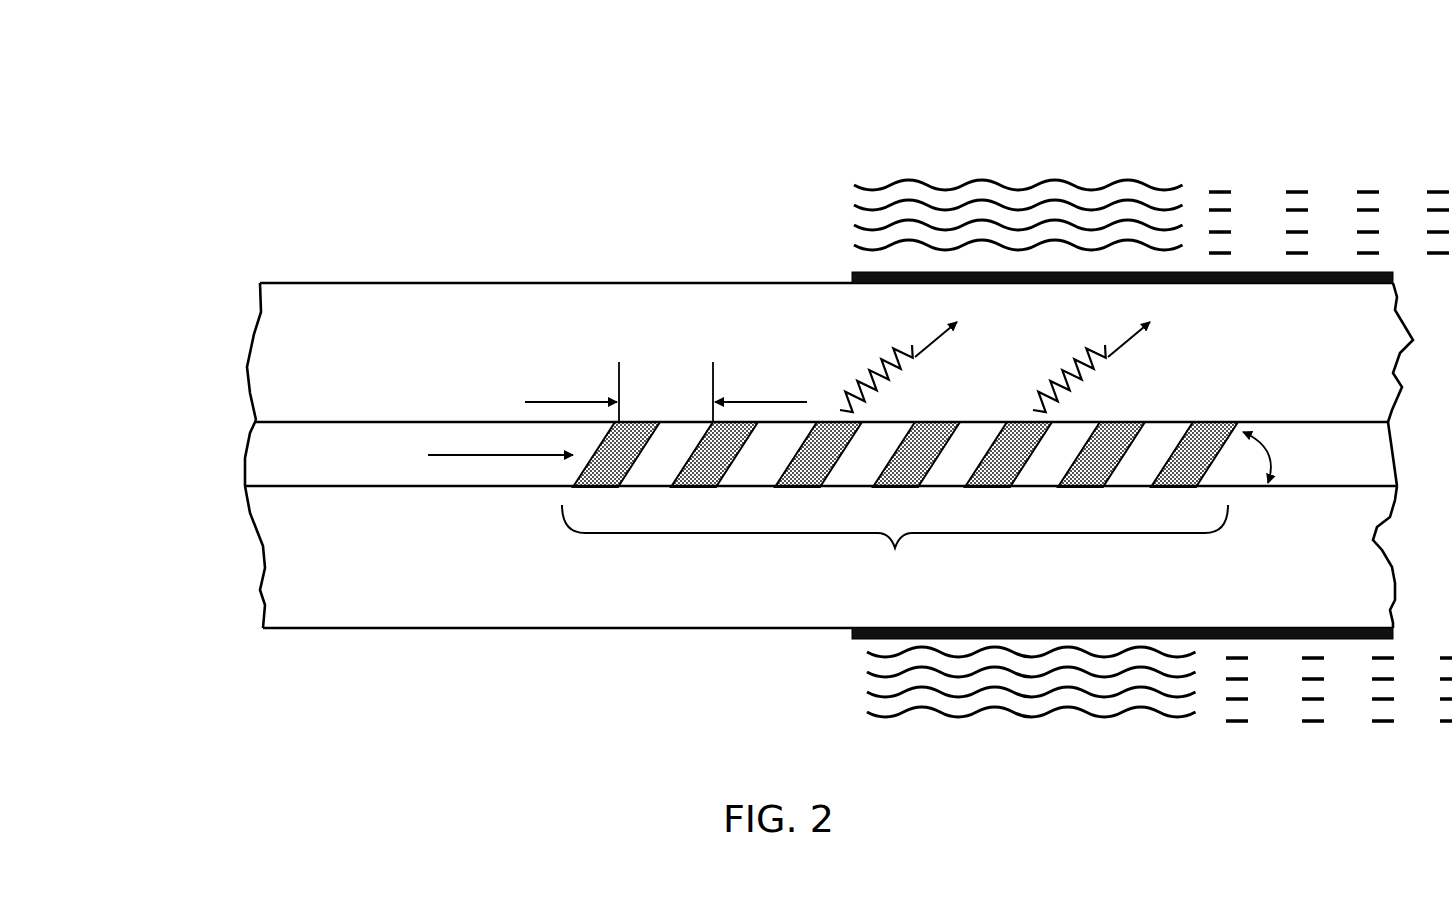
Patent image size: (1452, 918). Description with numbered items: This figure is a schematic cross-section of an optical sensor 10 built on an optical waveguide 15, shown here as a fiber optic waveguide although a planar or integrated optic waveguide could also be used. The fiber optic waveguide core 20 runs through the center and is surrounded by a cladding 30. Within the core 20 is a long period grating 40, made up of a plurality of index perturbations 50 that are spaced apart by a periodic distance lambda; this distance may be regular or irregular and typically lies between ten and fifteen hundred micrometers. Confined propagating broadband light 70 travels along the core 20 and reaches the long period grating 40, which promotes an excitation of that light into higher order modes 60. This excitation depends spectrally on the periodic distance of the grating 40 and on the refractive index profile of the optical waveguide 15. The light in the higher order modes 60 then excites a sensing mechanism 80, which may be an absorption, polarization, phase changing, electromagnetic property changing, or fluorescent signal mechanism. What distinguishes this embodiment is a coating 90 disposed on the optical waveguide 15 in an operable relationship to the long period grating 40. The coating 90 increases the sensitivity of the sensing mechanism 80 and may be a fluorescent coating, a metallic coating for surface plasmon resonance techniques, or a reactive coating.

The optical sensor 10 is at (773, 473).
The optical waveguide 15 is at (765, 420).
The fiber optic waveguide core 20 is at (768, 557).
The cladding 30 is at (830, 285).
The long period grating 40 is at (881, 480).
The index perturbations 50 is at (1287, 303).
The higher order modes 60 is at (914, 275).
The confined propagating broadband light 70 is at (473, 455).
The sensing mechanism 80 is at (1153, 462).
The coating 90 is at (1069, 441).